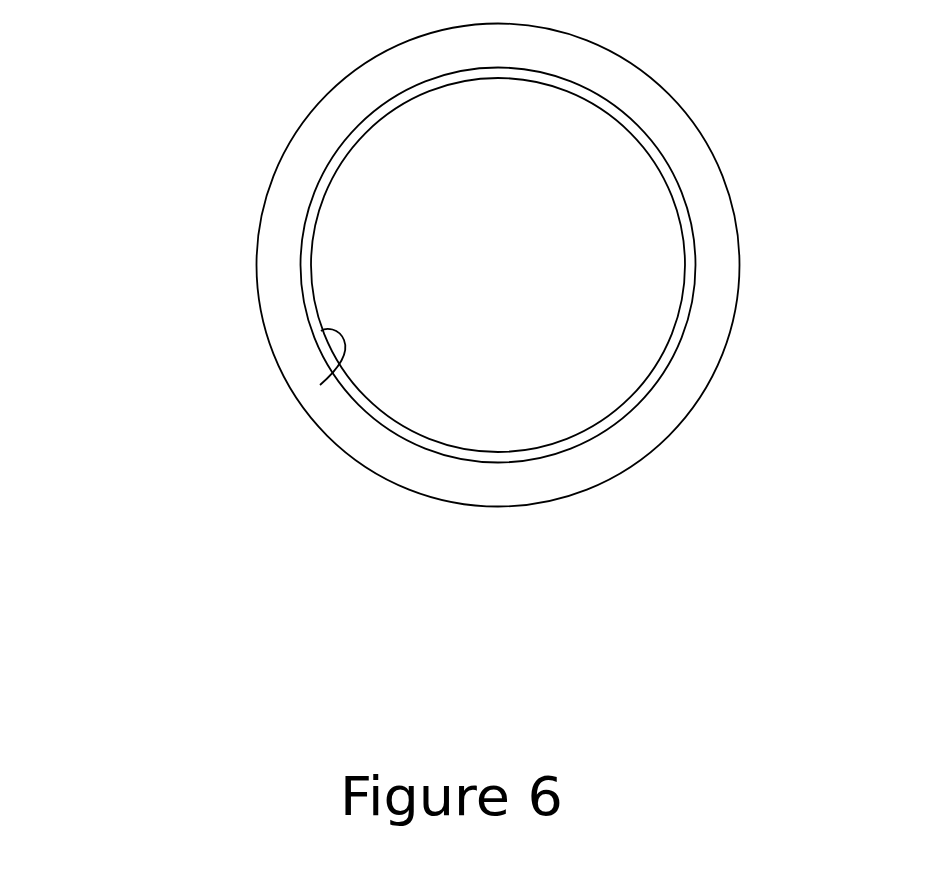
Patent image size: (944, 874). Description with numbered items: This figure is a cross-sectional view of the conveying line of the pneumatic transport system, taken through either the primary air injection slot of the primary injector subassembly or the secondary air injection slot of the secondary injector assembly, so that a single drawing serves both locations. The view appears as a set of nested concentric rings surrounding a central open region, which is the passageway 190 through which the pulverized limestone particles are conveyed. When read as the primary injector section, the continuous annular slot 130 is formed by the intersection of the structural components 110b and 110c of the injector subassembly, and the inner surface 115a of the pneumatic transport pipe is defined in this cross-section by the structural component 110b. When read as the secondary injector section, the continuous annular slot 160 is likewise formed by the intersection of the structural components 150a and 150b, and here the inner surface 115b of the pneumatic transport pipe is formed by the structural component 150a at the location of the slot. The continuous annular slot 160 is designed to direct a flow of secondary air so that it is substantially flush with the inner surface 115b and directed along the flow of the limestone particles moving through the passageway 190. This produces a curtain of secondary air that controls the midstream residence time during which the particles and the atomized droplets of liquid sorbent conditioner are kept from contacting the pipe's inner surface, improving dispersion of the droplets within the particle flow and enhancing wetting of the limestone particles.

The structural component 110c is at (416, 260).
The structural component 150b is at (390, 50).
The continuous annular slot 130 is at (407, 265).
The continuous annular slot 160 is at (392, 105).
The passageway 190 is at (413, 266).
The inner surface 115a is at (202, 377).
The inner surface 115b is at (320, 385).
The structural component 110b is at (306, 493).
The structural component 150a is at (441, 443).